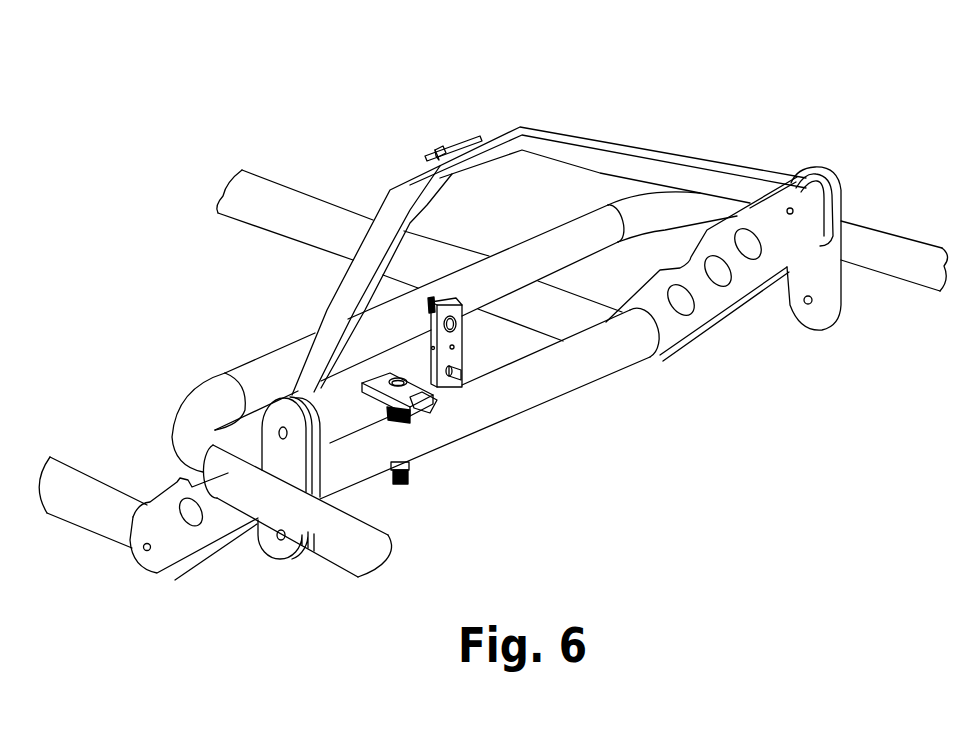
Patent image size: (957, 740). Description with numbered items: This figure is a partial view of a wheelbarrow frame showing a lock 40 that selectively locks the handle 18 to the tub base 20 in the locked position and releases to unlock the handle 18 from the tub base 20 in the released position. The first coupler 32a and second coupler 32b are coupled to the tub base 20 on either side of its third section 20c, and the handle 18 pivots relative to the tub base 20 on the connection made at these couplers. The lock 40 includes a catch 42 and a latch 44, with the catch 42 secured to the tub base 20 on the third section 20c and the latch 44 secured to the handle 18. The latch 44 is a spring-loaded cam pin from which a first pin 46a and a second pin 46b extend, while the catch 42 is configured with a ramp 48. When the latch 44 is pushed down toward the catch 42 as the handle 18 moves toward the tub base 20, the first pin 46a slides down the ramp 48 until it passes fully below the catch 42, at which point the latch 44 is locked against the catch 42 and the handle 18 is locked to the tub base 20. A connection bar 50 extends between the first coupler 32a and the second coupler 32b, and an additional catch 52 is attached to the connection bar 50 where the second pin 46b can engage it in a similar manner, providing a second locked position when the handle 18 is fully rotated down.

The handle 18 is at (333, 538).
The tub base 20 is at (107, 488).
The third section 20c is at (382, 470).
The first coupler 32a is at (682, 326).
The second coupler 32b is at (175, 550).
The lock 40 is at (483, 360).
The catch 42 is at (360, 386).
The latch 44 is at (464, 341).
The first pin 46a is at (427, 357).
The second pin 46b is at (466, 372).
The ramp 48 is at (409, 421).
The connection bar 50 is at (389, 196).
The catch 52 is at (452, 142).